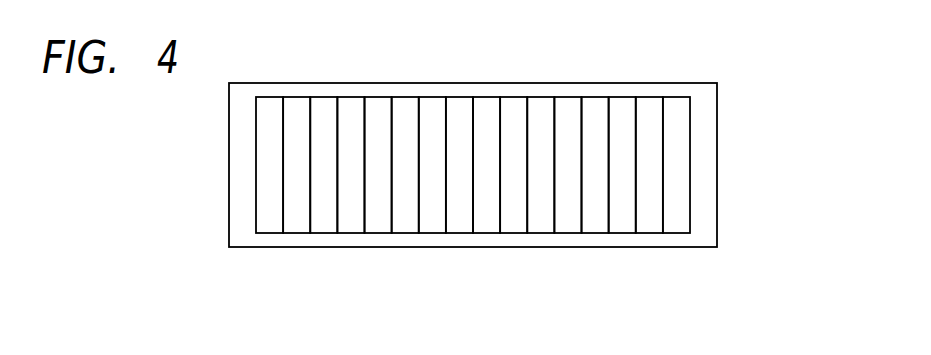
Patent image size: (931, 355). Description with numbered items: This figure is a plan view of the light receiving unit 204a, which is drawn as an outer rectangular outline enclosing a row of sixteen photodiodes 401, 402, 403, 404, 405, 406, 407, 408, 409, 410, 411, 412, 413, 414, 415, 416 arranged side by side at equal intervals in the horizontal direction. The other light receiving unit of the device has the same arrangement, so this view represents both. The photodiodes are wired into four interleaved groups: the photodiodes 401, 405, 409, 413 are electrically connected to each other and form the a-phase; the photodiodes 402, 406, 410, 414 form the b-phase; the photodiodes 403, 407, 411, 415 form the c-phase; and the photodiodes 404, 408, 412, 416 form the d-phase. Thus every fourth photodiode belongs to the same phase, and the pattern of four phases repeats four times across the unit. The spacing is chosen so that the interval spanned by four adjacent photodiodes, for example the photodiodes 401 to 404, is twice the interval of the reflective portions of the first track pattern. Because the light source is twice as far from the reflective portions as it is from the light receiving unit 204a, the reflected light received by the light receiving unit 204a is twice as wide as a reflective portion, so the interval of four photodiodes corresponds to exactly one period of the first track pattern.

The light receiving unit 204a is at (702, 93).
The photodiode 401 is at (270, 108).
The photodiode 402 is at (293, 223).
The photodiode 403 is at (325, 108).
The photodiode 404 is at (347, 223).
The photodiode 405 is at (379, 108).
The photodiode 406 is at (402, 223).
The photodiode 407 is at (434, 108).
The photodiode 408 is at (456, 223).
The photodiode 409 is at (488, 108).
The photodiode 410 is at (512, 223).
The photodiode 411 is at (542, 108).
The photodiode 412 is at (566, 223).
The photodiode 413 is at (597, 108).
The photodiode 414 is at (621, 223).
The photodiode 415 is at (651, 108).
The photodiode 416 is at (676, 223).